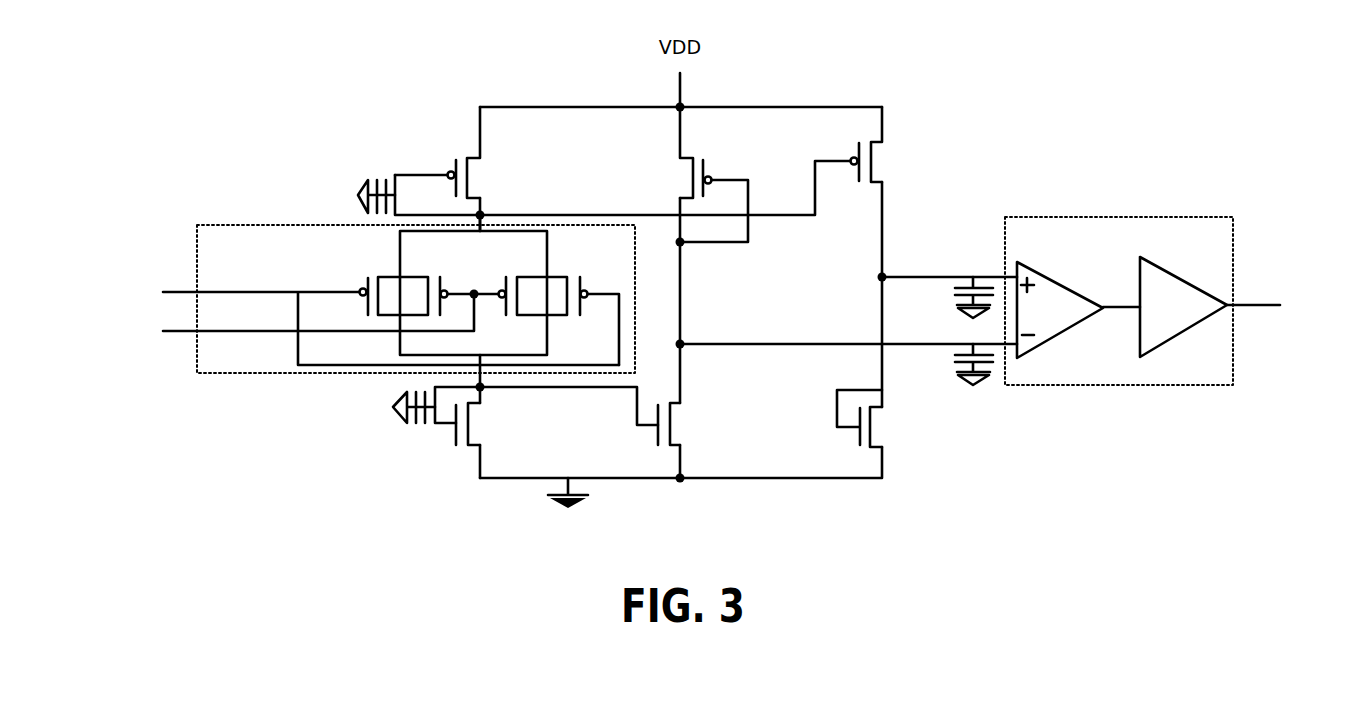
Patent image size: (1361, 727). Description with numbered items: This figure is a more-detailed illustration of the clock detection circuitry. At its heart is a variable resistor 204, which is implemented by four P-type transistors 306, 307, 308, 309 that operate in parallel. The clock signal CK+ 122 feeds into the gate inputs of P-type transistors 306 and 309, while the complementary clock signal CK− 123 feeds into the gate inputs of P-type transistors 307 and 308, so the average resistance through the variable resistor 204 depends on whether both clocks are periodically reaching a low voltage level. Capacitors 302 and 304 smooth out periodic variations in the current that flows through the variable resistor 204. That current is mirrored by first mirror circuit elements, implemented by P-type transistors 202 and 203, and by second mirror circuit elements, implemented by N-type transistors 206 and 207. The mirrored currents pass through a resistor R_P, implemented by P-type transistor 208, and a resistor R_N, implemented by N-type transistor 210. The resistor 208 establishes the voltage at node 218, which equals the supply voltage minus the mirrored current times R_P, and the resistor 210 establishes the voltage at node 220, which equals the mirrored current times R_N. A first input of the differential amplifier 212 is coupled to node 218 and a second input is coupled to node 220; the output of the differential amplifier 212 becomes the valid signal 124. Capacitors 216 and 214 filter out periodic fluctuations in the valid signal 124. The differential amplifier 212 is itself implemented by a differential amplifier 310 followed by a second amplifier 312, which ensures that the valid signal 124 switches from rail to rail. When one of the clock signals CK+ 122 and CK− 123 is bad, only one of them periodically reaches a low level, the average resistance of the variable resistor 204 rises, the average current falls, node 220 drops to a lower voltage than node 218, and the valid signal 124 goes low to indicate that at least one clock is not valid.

The signal CK+ 122 is at (338, 324).
The signal CK− 123 is at (268, 324).
The valid signal 124 is at (1289, 303).
The P-type transistor 202 is at (457, 152).
The P-type transistor 203 is at (886, 144).
The variable resistor 204 is at (197, 225).
The N-type transistor 206 is at (486, 424).
The N-type transistor 207 is at (689, 424).
The resistor R_P 208 is at (694, 174).
The resistor R_N 210 is at (879, 418).
The differential amplifier 212 is at (1119, 301).
The capacitor 214 is at (948, 364).
The capacitor 216 is at (951, 297).
The node 218 is at (683, 341).
The node 220 is at (885, 274).
The capacitor 302 is at (377, 179).
The capacitor 304 is at (414, 425).
The P-type transistor 306 is at (382, 282).
The P-type transistor 307 is at (452, 283).
The P-type transistor 308 is at (520, 283).
The P-type transistor 309 is at (590, 308).
The differential amplifier 310 is at (1078, 310).
The second amplifier 312 is at (1183, 307).